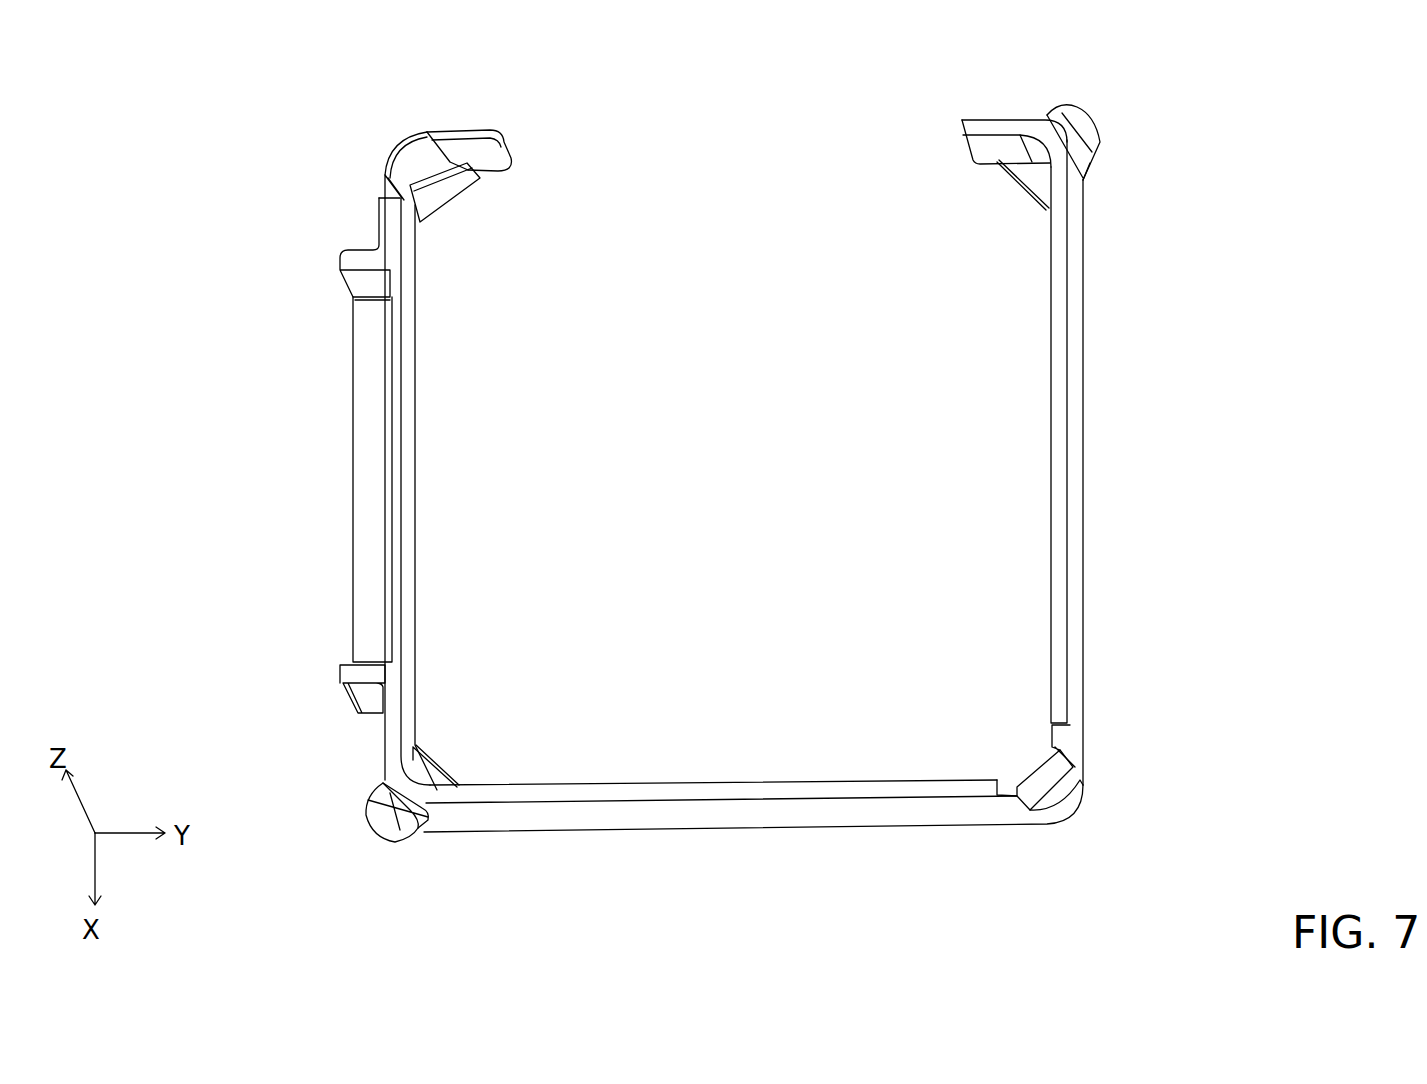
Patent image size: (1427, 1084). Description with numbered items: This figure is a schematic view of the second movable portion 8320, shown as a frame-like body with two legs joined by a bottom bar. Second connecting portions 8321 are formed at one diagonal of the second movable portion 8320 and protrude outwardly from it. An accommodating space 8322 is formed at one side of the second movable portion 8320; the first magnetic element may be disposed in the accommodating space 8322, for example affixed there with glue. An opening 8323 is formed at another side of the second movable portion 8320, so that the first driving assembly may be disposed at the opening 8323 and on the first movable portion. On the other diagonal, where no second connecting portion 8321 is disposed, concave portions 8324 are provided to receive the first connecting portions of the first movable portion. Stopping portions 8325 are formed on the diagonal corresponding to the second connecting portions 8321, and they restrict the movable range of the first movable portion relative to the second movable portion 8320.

The second movable portion 8320 is at (190, 92).
The second connecting portion 8321 is at (1090, 133).
The accommodating space 8322 is at (372, 477).
The opening 8323 is at (734, 141).
The concave portion 8324 is at (413, 159).
The stopping portion 8325 is at (1037, 182).